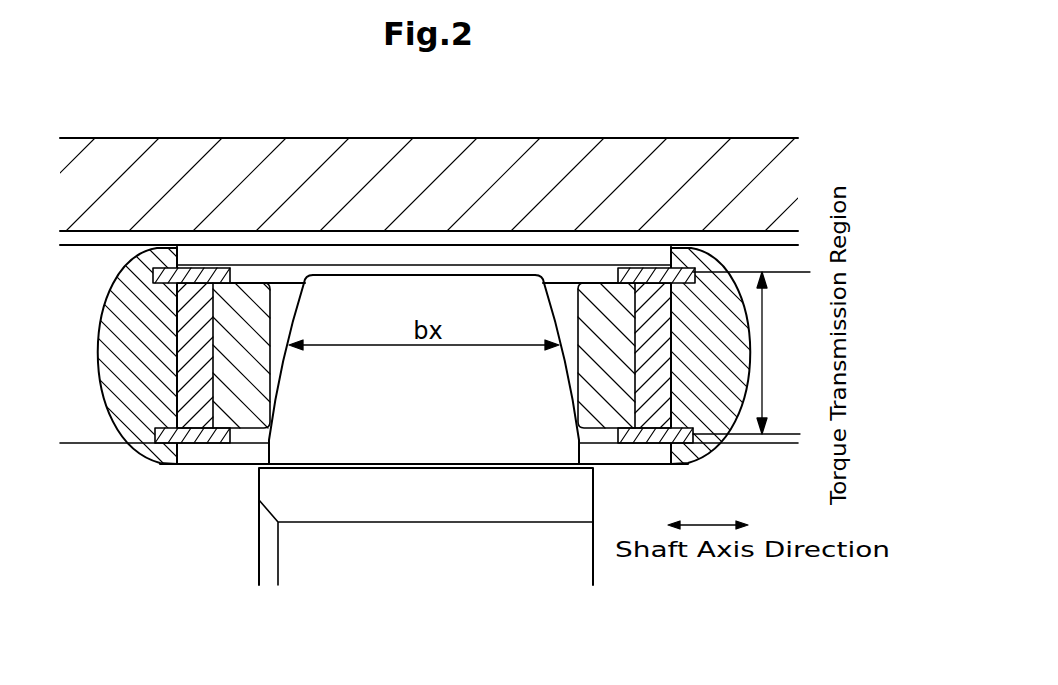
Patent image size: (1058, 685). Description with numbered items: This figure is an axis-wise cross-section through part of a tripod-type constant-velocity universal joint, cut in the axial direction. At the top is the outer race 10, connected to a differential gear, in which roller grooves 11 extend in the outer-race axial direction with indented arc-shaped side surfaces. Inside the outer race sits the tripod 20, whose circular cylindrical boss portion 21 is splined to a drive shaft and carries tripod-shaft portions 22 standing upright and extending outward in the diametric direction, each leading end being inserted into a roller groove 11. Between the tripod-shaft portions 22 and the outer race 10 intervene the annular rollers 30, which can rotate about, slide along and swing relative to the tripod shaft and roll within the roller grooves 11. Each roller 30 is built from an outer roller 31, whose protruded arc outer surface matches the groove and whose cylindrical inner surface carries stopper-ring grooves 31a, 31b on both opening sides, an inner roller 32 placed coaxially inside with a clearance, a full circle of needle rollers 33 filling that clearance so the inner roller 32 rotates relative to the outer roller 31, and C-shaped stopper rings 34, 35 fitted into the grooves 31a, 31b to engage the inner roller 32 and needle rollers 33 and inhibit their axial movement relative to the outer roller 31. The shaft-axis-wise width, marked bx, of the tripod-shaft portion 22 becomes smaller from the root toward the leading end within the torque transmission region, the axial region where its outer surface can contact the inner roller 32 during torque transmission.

The outer race 10 is at (678, 137).
The roller grooves 11 is at (766, 243).
The tripod 20 is at (426, 440).
The boss portion 21 is at (293, 565).
The tripod-shaft portions 22 is at (353, 368).
The rollers 30 is at (247, 278).
The outer roller 31 is at (127, 273).
The stopper-ring groove 31a is at (162, 250).
The stopper-ring groove 31b is at (160, 465).
The inner roller 32 is at (290, 262).
The needle rollers 33 is at (195, 308).
The stopper ring 34 is at (182, 268).
The stopper ring 35 is at (207, 437).